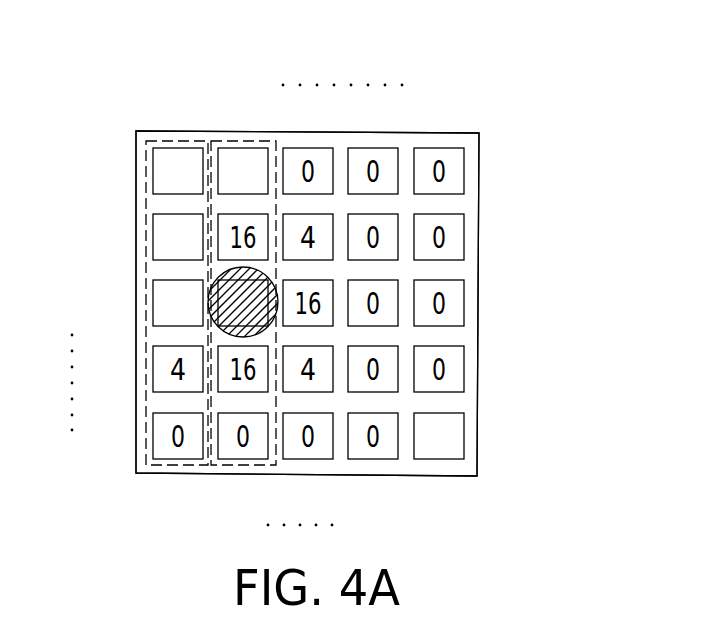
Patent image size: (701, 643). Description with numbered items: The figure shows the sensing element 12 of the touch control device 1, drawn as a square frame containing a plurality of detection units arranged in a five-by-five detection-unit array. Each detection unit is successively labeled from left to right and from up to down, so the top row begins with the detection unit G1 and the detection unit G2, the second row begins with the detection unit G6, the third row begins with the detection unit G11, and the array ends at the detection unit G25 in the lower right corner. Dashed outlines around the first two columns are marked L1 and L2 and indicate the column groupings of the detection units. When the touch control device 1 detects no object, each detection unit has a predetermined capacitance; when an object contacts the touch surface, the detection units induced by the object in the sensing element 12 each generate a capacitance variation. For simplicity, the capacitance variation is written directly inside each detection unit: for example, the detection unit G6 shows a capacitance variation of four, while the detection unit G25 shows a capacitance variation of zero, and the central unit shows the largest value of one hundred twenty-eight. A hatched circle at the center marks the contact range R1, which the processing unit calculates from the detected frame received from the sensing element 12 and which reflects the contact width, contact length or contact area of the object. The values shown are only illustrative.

The touch control device 1 is at (94, 100).
The sensing element 12 is at (478, 362).
The detection unit G1 is at (172, 142).
The detection unit G2 is at (238, 146).
The detection unit G6 is at (152, 237).
The detection unit G11 is at (152, 302).
The detection unit G25 is at (466, 438).
The pixel column line L1 is at (176, 468).
The pixel column line L2 is at (243, 468).
The contact range R1 is at (268, 327).